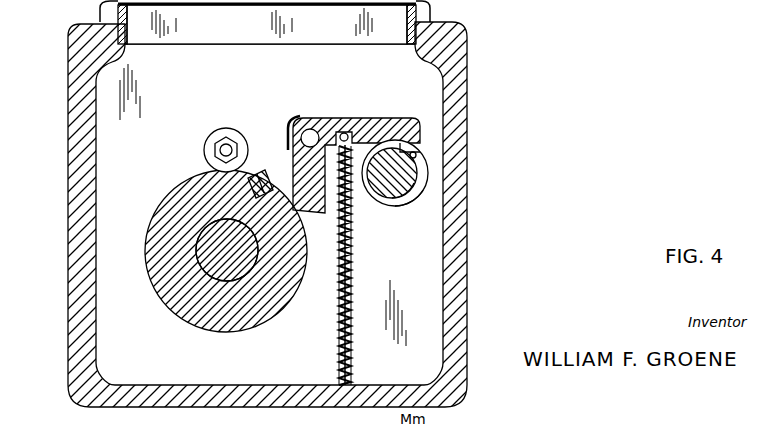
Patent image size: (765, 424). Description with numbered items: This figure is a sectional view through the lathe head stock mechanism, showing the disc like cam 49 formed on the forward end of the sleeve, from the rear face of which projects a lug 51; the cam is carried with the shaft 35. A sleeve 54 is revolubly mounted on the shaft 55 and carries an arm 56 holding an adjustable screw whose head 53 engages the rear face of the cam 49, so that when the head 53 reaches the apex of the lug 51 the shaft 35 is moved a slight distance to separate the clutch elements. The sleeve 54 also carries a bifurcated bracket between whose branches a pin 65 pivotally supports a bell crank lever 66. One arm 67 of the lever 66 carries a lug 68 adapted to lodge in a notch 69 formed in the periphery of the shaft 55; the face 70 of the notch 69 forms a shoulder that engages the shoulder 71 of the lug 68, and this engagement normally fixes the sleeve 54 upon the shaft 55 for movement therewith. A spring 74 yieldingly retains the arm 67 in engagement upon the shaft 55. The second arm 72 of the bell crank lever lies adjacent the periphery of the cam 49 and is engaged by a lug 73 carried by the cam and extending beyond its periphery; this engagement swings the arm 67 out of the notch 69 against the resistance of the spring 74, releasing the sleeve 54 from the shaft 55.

The shaft 35 is at (240, 263).
The disc like cam 49 is at (170, 249).
The lug 51 is at (250, 176).
The head 53 is at (206, 140).
The sleeve 54 is at (418, 156).
The shaft 55 is at (416, 200).
The arm 56 is at (288, 140).
The pin 65 is at (313, 129).
The bell crank lever 66 is at (410, 119).
The one arm of the lever 67 is at (392, 141).
The lug 68 is at (387, 149).
The notch 69 is at (412, 160).
The face of the notch 70 is at (410, 186).
The shoulder 71 is at (349, 136).
The second arm of the bell crank lever 72 is at (352, 214).
The lug 73 is at (250, 182).
The spring 74 is at (352, 208).